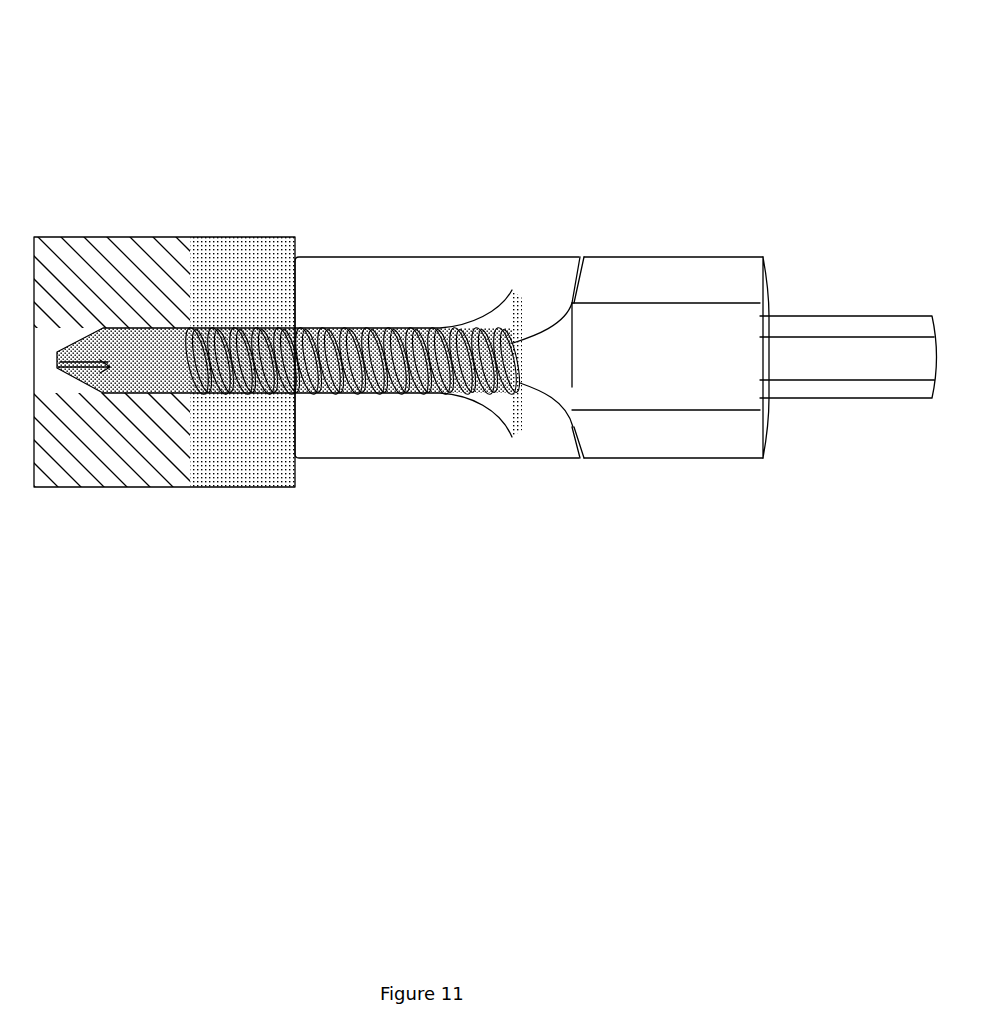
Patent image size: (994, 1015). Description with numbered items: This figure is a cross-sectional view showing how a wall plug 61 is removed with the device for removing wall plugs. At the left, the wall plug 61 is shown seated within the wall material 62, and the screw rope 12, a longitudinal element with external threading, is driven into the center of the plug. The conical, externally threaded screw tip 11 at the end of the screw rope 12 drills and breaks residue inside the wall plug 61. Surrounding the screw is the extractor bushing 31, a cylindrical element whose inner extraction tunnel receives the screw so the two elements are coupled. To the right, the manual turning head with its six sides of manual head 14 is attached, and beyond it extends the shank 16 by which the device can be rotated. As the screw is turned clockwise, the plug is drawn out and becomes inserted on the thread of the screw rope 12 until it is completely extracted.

The wall plug 61 is at (137, 343).
The substrate material layer 62 is at (248, 275).
The screw tip 11 is at (186, 365).
The screw rope 12 is at (256, 385).
The extractor bushing 31 is at (485, 315).
The sides of manual head 14 is at (700, 290).
The drive shaft 16 is at (872, 328).